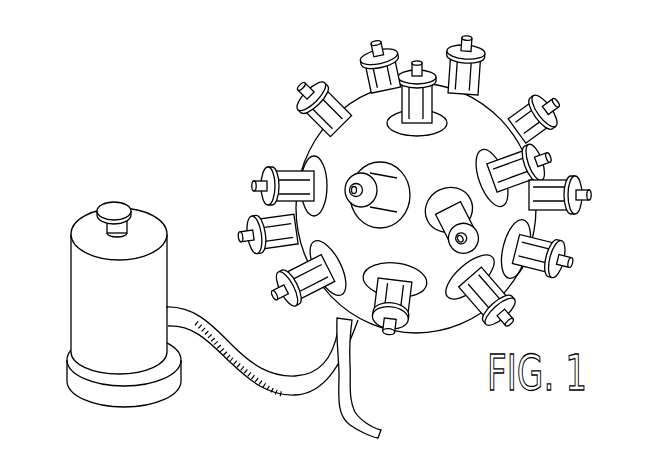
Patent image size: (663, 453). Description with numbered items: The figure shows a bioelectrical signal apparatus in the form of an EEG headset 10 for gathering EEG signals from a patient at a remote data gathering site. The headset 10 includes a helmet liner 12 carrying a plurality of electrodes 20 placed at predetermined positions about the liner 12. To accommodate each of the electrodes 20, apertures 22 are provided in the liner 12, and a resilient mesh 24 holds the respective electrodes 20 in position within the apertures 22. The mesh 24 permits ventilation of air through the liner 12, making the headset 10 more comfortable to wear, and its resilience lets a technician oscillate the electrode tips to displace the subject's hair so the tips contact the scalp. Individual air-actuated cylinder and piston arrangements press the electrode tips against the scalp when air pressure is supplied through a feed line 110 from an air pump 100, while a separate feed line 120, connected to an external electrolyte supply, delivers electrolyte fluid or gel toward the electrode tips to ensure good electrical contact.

The EEG headset 10 is at (503, 99).
The helmet liner 12 is at (430, 316).
The electrodes 20 is at (445, 55).
The apertures 22 is at (406, 170).
The resilient mesh 24 is at (400, 184).
The air pump 100 is at (88, 310).
The feed line 110 is at (224, 343).
The feed line 120 is at (350, 402).